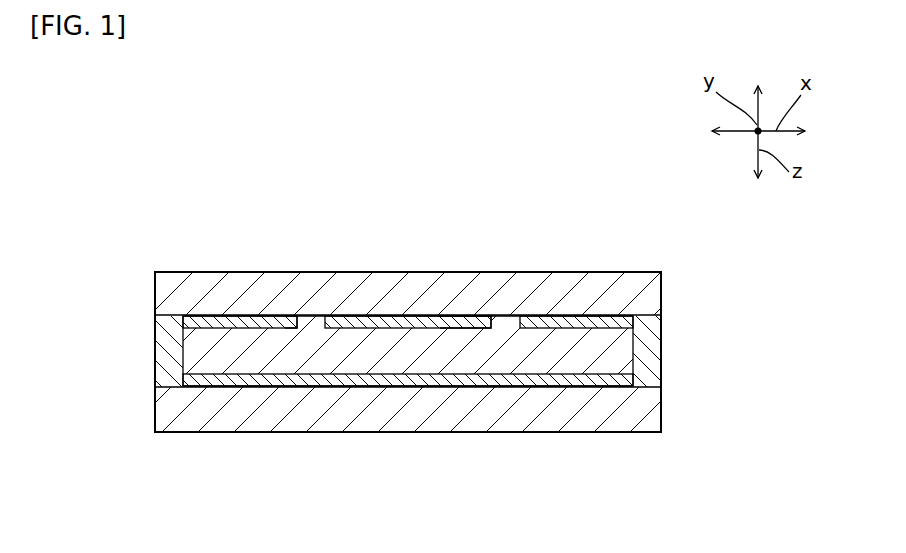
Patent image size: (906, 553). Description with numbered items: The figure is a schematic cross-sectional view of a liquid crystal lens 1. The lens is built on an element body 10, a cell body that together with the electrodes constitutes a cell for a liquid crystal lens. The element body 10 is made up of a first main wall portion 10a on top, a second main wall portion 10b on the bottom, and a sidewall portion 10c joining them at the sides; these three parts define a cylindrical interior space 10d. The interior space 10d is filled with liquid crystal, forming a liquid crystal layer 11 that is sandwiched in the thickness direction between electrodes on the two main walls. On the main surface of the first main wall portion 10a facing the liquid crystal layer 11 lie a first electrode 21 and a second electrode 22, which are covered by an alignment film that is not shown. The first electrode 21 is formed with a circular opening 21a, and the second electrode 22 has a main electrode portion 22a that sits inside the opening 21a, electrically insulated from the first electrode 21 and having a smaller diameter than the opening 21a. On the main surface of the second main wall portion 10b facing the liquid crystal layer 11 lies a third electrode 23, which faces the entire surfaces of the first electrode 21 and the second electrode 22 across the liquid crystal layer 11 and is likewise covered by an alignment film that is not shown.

The liquid crystal lens 1 is at (556, 177).
The element body 10 is at (226, 270).
The first main wall portion 10a is at (661, 289).
The second main wall portion 10b is at (661, 406).
The sidewall portion 10c is at (155, 337).
The interior space 10d is at (183, 363).
The liquid crystal layer 11 is at (661, 337).
The first electrode 21 is at (278, 314).
The opening 21a is at (297, 320).
The second electrode 22 is at (403, 314).
The main electrode portion 22a is at (452, 317).
The third electrode 23 is at (407, 388).